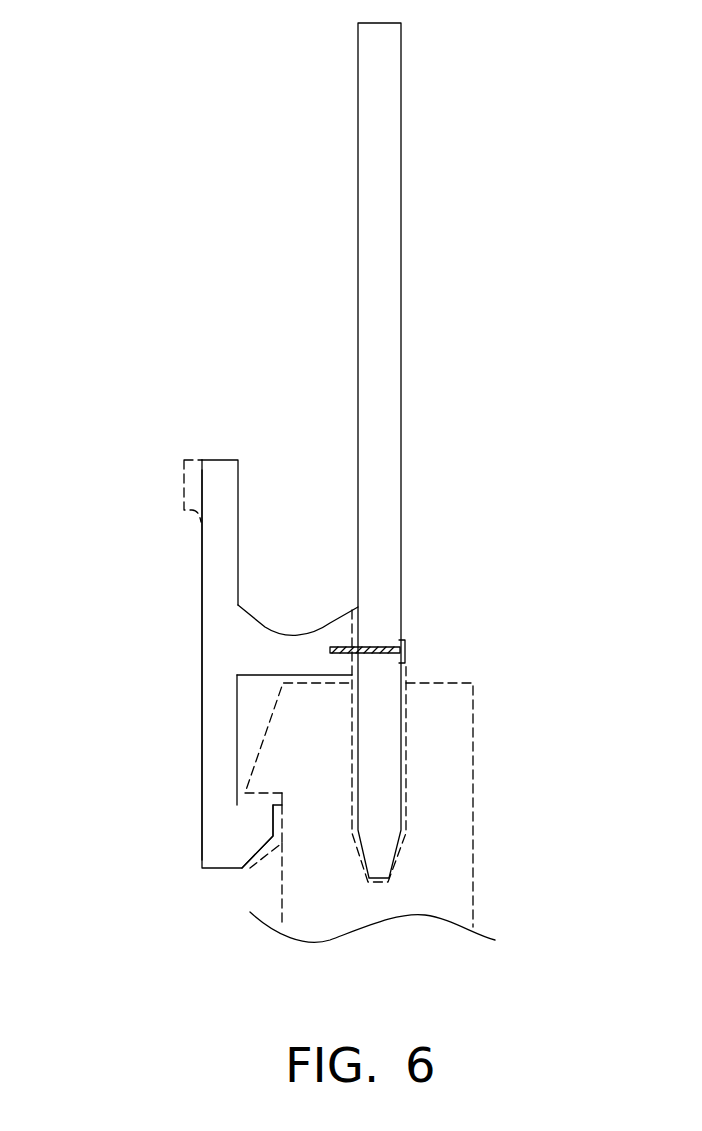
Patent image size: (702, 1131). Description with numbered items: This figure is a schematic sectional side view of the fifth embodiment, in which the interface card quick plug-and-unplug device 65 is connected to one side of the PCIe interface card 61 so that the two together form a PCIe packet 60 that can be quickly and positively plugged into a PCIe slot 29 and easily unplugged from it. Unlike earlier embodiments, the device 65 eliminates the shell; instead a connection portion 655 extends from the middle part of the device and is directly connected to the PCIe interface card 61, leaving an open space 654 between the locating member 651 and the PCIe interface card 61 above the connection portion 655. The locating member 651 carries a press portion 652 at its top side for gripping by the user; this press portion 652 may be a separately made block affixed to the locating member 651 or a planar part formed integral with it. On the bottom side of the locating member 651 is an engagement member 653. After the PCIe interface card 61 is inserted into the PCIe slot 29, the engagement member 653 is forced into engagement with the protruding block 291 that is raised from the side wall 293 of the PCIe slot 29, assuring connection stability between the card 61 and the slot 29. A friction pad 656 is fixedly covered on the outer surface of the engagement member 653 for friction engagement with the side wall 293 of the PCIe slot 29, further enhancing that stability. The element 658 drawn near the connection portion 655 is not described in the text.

The PCIe packet 60 is at (240, 167).
The PCIe interface card 61 is at (388, 286).
The interface card quick plug-and-unplug device 65 is at (190, 683).
The locating member 651 is at (206, 558).
The press portion 652 is at (185, 487).
The engagement member 653 is at (245, 834).
The open space 654 is at (303, 540).
The connection portion 655 is at (288, 657).
The friction pad 656 is at (266, 853).
The stopper bar 658 is at (368, 648).
The PCIe slot 29 is at (480, 842).
The protruding block 291 is at (256, 779).
The side wall 293 is at (297, 903).